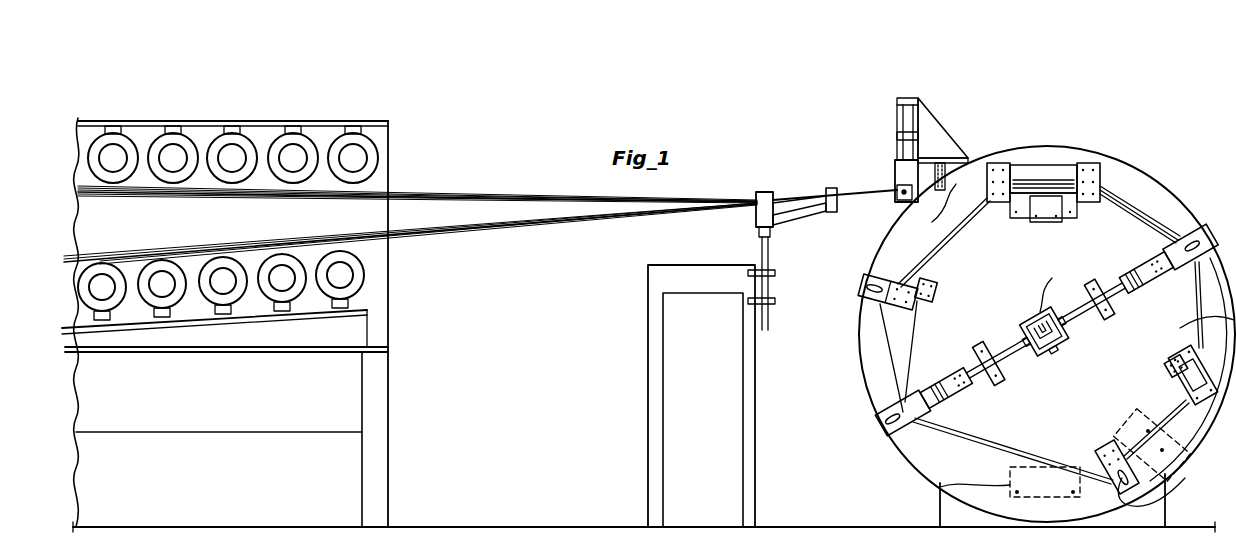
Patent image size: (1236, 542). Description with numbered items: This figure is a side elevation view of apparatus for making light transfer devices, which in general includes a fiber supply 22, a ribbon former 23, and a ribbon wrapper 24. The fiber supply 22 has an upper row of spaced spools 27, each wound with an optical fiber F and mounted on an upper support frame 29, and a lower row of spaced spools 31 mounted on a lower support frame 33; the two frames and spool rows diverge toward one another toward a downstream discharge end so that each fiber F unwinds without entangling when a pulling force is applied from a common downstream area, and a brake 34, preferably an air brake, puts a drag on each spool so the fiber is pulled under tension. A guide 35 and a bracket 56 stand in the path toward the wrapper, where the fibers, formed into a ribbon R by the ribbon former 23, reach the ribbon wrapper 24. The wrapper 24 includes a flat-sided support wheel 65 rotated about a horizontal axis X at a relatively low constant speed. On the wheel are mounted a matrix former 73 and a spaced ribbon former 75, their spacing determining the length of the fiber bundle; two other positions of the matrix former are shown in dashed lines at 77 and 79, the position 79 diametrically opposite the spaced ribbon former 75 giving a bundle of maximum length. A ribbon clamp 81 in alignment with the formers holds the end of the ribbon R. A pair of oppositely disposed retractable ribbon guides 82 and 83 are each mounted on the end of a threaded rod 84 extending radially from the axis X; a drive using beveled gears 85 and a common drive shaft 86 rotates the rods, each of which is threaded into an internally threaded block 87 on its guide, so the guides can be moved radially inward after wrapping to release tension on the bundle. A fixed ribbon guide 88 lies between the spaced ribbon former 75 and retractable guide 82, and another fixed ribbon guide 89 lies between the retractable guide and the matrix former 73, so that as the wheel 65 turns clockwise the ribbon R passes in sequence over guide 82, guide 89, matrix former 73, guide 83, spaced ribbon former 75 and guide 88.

The fiber supply 22 is at (462, 110).
The upper support frame 29 is at (146, 122).
The brake 34 is at (237, 156).
The spools 27 is at (297, 158).
The spools 31 is at (343, 275).
The lower support frame 33 is at (358, 330).
The optical fiber F is at (200, 192).
The filament guide 35 is at (762, 190).
The ribbon former 23 is at (853, 175).
The guide bracket 56 is at (926, 124).
The ribbon wrapper 24 is at (1206, 180).
The ribbon R is at (933, 212).
The spaced ribbon former 75 is at (1052, 176).
The fixed ribbon guide 88 is at (880, 288).
The ribbon clamp 81 is at (926, 289).
The retractable ribbon guide 82 is at (878, 416).
The threaded rod 84 is at (1000, 350).
The beveled gears 85 is at (1062, 343).
The common drive shaft 86 is at (1052, 350).
The internally threaded block 87 is at (1132, 284).
The retractable ribbon guide 83 is at (1200, 250).
The support wheel 65 is at (1175, 332).
The matrix former 73 is at (1126, 384).
The matrix former position 77 is at (1188, 436).
The matrix former position 79 is at (936, 492).
The fixed ribbon guide 89 is at (1160, 503).
The axis X is at (1043, 284).